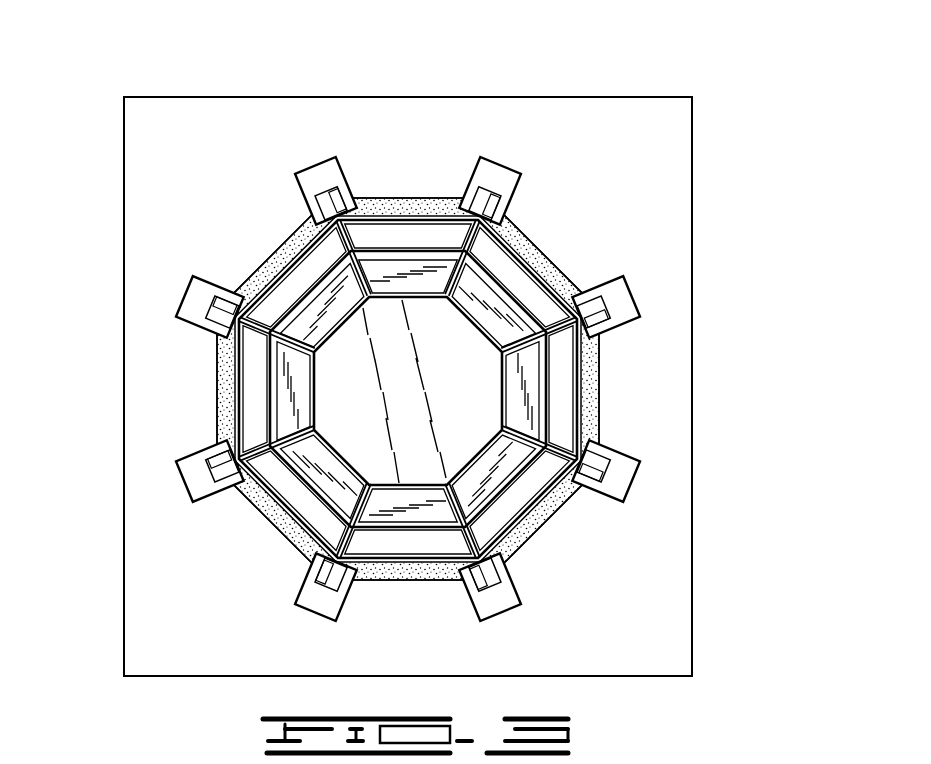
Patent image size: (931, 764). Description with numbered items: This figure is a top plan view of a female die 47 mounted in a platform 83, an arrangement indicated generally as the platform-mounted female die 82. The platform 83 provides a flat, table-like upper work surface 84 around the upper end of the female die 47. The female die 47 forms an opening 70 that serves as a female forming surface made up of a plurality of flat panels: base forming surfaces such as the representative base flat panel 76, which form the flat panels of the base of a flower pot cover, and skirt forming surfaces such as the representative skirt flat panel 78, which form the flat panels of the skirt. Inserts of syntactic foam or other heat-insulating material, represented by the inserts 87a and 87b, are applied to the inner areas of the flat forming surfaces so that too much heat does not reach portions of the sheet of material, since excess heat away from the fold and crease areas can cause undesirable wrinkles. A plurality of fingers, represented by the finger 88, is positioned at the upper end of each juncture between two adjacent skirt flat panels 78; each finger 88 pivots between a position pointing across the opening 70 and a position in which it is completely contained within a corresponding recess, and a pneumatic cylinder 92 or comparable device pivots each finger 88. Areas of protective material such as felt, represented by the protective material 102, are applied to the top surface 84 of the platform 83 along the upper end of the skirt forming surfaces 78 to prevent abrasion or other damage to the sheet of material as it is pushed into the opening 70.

The female die 47 is at (427, 203).
The opening 70 is at (397, 412).
The base flat panel 76 is at (542, 387).
The skirt flat panel 78 is at (577, 357).
The platform-mounted female die 82 is at (708, 167).
The platform 83 is at (124, 155).
The upper work surface 84 is at (587, 172).
The insert of syntactic foam 87a is at (518, 407).
The insert of syntactic foam 87b is at (560, 405).
The finger 88 is at (370, 200).
The pneumatic cylinder 92 is at (345, 193).
The protective material 102 is at (277, 255).